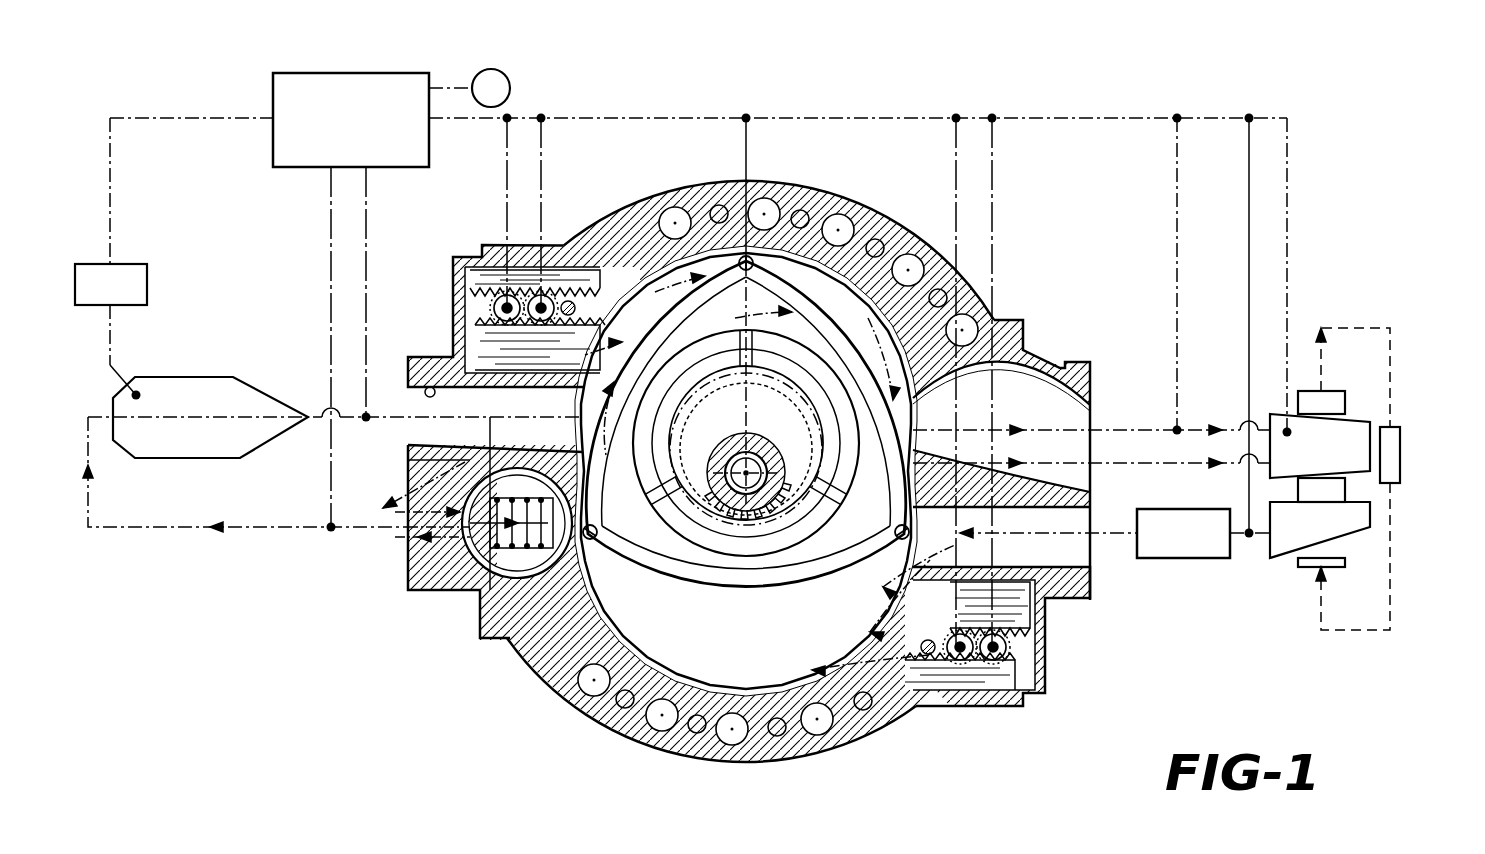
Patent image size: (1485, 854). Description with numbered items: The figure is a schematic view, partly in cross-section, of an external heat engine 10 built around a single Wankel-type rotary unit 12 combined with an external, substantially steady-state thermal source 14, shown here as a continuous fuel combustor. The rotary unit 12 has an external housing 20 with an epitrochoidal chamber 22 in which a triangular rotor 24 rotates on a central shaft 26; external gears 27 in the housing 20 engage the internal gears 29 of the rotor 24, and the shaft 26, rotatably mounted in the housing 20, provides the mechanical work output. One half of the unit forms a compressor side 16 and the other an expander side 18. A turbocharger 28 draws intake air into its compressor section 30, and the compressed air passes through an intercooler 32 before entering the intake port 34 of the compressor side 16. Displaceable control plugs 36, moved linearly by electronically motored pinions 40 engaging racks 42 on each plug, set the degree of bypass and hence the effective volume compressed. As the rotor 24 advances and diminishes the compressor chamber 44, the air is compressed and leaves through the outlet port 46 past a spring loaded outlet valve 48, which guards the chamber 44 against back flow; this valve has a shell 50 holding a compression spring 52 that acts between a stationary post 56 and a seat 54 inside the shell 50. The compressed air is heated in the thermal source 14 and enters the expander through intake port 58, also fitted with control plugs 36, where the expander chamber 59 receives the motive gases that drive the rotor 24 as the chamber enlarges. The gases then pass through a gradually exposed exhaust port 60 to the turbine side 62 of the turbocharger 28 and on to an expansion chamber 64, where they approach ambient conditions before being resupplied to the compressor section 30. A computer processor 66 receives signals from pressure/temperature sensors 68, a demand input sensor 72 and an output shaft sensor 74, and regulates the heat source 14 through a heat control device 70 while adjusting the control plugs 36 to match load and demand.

The external heat engine 10 is at (848, 103).
The Wankel-type rotary unit 12 is at (838, 200).
The thermal source 14 is at (196, 380).
The compressor side 16 is at (642, 640).
The expander side 18 is at (858, 300).
The external housing 20 is at (873, 723).
The epitrochoidal chamber 22 is at (746, 448).
The triangular rotor 24 is at (793, 587).
The central shaft 26 is at (770, 458).
The external gears 27 is at (792, 480).
The turbocharger 28 is at (1370, 375).
The internal gears 29 is at (690, 475).
The compressor section 30 is at (1363, 521).
The intercooler 32 is at (1180, 552).
The intake port 34 is at (1091, 562).
The control plugs 36 is at (560, 284).
The electronically motored pinions 40 is at (1040, 653).
The racks 42 is at (1007, 636).
The compressor chamber 44 is at (745, 683).
The outlet port 46 is at (410, 472).
The spring loaded outlet valve 48 is at (432, 523).
The shell 50 is at (486, 561).
The compression spring 52 is at (537, 557).
The seat 54 is at (533, 550).
The stationary post 56 is at (470, 556).
The intake port 58 is at (428, 388).
The expander chamber 59 is at (660, 334).
The exhaust port 60 is at (1043, 393).
The turbine side 62 is at (1352, 479).
The expansion chamber 64 is at (1397, 463).
The computer processor 66 is at (363, 80).
The pressure/temperature sensors 68 is at (140, 393).
The heat control device 70 is at (128, 268).
The demand input sensor 72 is at (490, 75).
The output shaft sensor 74 is at (740, 453).